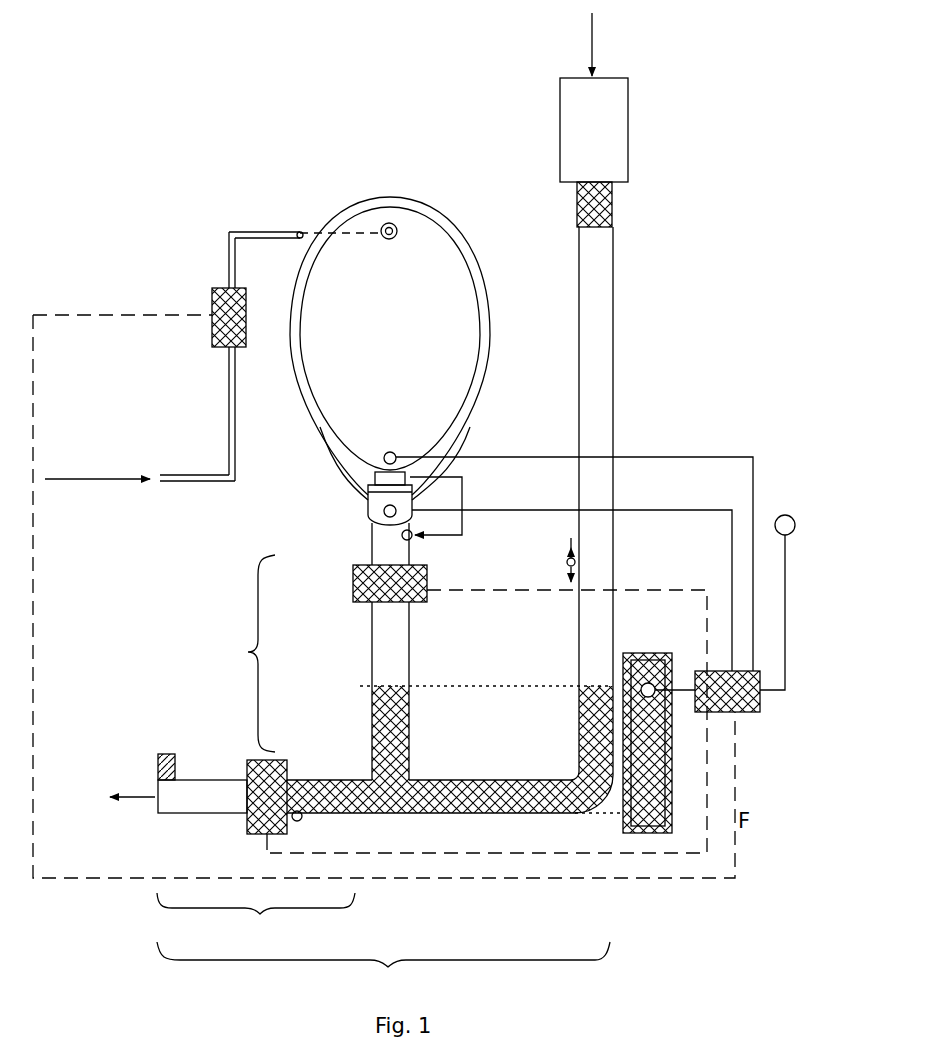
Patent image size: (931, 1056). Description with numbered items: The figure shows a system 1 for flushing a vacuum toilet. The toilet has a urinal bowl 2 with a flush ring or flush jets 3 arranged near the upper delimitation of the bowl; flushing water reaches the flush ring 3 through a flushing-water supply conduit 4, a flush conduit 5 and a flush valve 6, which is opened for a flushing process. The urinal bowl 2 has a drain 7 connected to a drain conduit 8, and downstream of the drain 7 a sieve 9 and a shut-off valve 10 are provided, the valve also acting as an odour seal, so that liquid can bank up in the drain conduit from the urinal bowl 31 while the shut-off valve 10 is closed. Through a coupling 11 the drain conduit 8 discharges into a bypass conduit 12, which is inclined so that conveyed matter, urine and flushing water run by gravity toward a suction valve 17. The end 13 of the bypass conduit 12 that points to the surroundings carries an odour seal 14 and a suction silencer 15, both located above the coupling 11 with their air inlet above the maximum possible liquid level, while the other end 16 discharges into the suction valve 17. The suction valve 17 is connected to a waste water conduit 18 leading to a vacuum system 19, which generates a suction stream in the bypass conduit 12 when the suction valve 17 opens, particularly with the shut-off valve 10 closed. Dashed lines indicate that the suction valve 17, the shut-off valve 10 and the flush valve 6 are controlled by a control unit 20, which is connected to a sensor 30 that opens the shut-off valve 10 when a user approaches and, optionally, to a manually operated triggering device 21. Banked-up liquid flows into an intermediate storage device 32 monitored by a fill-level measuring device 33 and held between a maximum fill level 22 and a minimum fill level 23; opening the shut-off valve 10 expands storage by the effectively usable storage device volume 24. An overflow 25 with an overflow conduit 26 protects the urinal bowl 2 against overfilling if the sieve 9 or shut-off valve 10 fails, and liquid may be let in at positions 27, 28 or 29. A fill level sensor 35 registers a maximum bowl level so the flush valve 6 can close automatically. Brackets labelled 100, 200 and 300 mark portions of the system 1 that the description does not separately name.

The system 1 is at (155, 130).
The urinal bowl 2 is at (486, 350).
The flush ring or flush jet(s) 3 is at (391, 222).
The flushing-water supply conduit 4 is at (200, 483).
The flush conduit 5 is at (229, 393).
The flush valve 6 is at (212, 295).
The drain 7 is at (368, 502).
The drain conduit 8 is at (372, 652).
The sieve 9 is at (352, 478).
The shut-off valve 10 is at (353, 583).
The coupling 11 is at (372, 780).
The bypass conduit 12 is at (614, 291).
The end of the bypass conduit 13 is at (630, 76).
The odour seal 14 is at (614, 210).
The suction silencer 15 is at (622, 135).
The other end of the bypass conduit 16 is at (330, 780).
The suction valve 17 is at (258, 834).
The waste water conduit 18 is at (220, 780).
The vacuum system 19 is at (160, 758).
The control unit 20 is at (740, 712).
The triggering device 21 is at (783, 515).
The maximum fill level 22 is at (505, 686).
The minimum fill level 23 is at (596, 815).
The effectively usable storage device volume 24 is at (548, 780).
The overflow 25 is at (430, 455).
The overflow conduit 26 is at (455, 500).
The liquid inlet position 27 is at (413, 540).
The liquid inlet position 28 is at (303, 818).
The liquid inlet position 29 is at (567, 560).
The sensor 30 is at (383, 512).
The drain conduit from the urinal bowl 31 is at (372, 540).
The intermediate storage device 32 is at (490, 780).
The fill-level measuring device 33 is at (672, 750).
The fill level sensor 35 is at (390, 451).
The apparatus section 100 is at (384, 656).
The apparatus section 200 is at (456, 704).
The apparatus section 300 is at (256, 919).